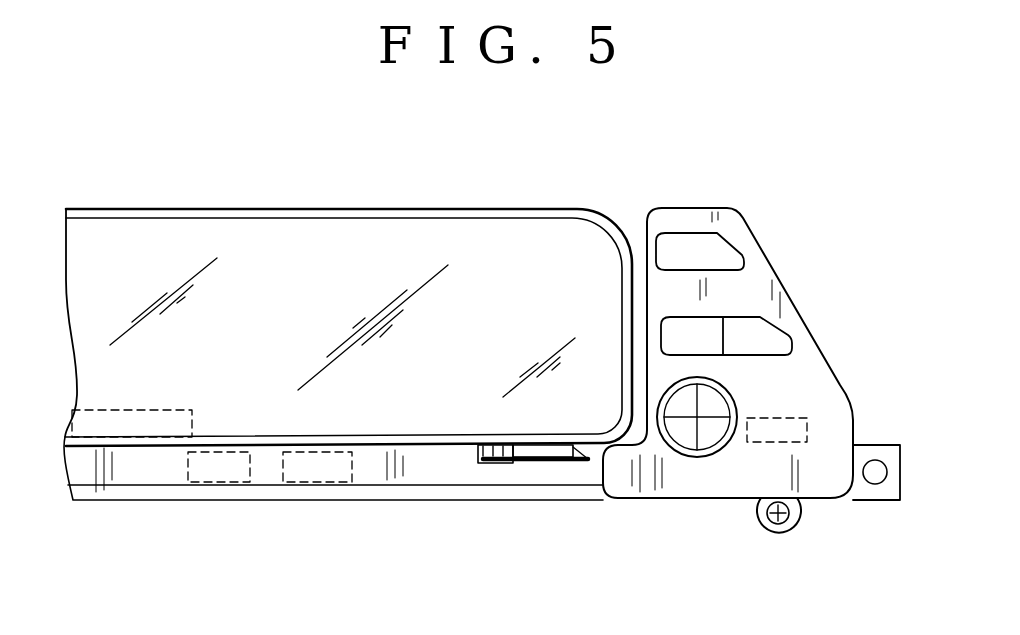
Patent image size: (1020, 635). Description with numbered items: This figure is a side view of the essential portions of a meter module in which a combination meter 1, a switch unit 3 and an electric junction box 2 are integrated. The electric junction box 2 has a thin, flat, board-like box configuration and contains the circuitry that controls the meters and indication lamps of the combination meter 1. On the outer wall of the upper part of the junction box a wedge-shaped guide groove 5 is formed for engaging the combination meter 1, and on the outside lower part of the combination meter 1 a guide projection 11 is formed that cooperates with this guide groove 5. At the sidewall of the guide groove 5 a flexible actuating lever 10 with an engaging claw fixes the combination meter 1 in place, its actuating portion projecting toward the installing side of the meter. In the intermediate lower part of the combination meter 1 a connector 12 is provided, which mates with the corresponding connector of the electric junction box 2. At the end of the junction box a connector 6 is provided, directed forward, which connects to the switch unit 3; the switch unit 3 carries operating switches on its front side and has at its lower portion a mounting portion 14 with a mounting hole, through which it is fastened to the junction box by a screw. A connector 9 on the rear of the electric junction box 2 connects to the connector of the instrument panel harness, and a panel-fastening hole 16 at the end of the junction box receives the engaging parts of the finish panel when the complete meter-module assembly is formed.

The combination meter 1 is at (505, 208).
The electric junction box 2 is at (420, 495).
The switch unit 3 is at (768, 270).
The guide groove 5 is at (570, 462).
The connector 6 is at (800, 408).
The connector 9 is at (245, 483).
The flexible actuating lever 10 is at (507, 462).
The guide projection 11 is at (545, 462).
The connector 12 is at (121, 425).
The mounting portion 14 is at (762, 514).
The panel-fastening hole 16 is at (873, 465).